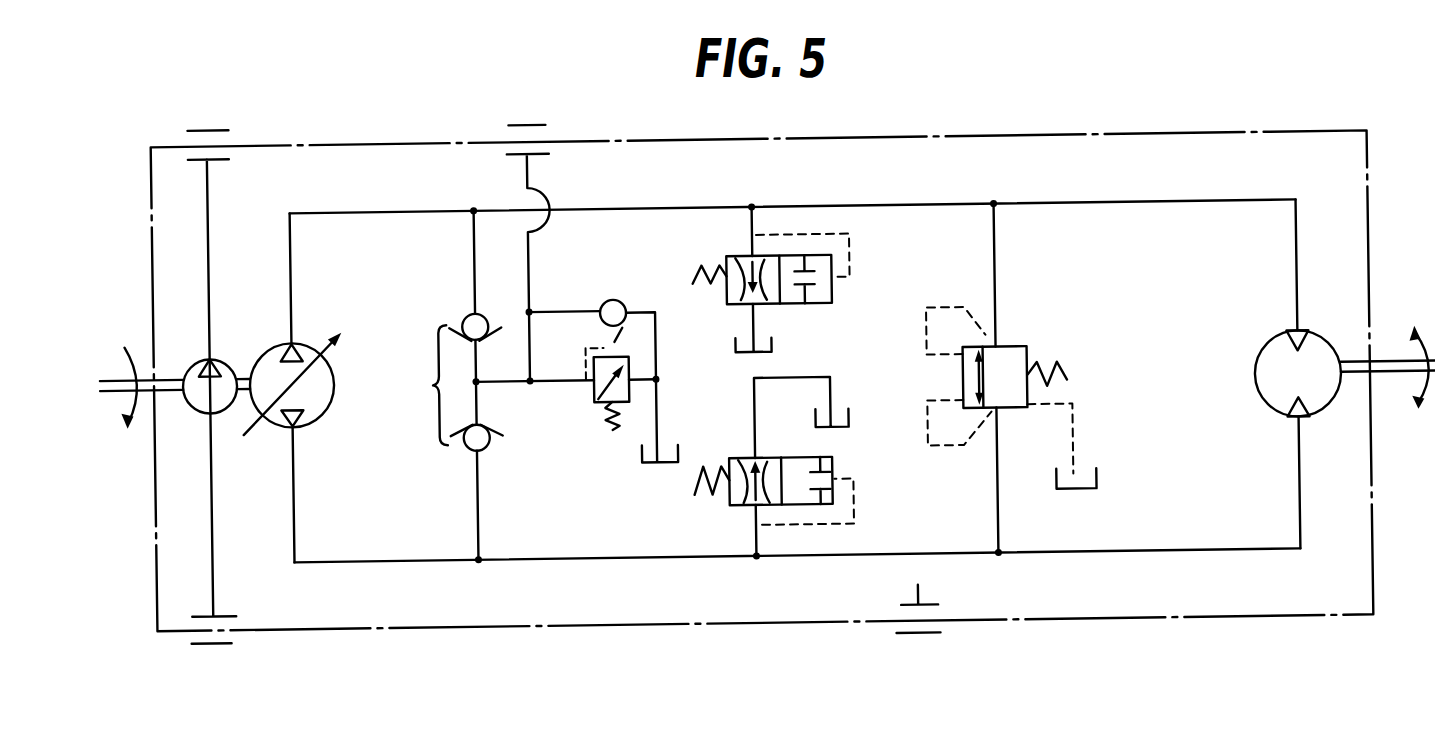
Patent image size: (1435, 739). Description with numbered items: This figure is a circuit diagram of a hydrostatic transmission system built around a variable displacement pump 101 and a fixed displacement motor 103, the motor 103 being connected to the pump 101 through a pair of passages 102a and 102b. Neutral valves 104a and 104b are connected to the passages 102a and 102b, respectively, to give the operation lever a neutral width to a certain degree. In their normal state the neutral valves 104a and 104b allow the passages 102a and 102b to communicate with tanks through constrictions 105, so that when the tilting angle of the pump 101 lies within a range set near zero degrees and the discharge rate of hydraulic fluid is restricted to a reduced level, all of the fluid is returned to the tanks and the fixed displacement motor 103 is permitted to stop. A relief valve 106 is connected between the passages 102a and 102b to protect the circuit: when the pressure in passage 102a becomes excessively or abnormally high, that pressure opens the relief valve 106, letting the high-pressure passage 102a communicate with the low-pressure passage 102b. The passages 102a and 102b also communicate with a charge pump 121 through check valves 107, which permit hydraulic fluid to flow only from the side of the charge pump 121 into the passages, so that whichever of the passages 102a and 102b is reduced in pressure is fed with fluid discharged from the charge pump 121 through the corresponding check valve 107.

The variable displacement pump 101 is at (307, 344).
The passage 102a is at (850, 204).
The passage 102b is at (880, 556).
The fixed displacement motor 103 is at (1262, 350).
The neutral valve 104a is at (860, 295).
The neutral valve 104b is at (714, 504).
The constriction 105 is at (745, 277).
The relief valve 106 is at (1027, 348).
The check valves 107 is at (497, 385).
The charge pump 121 is at (228, 354).